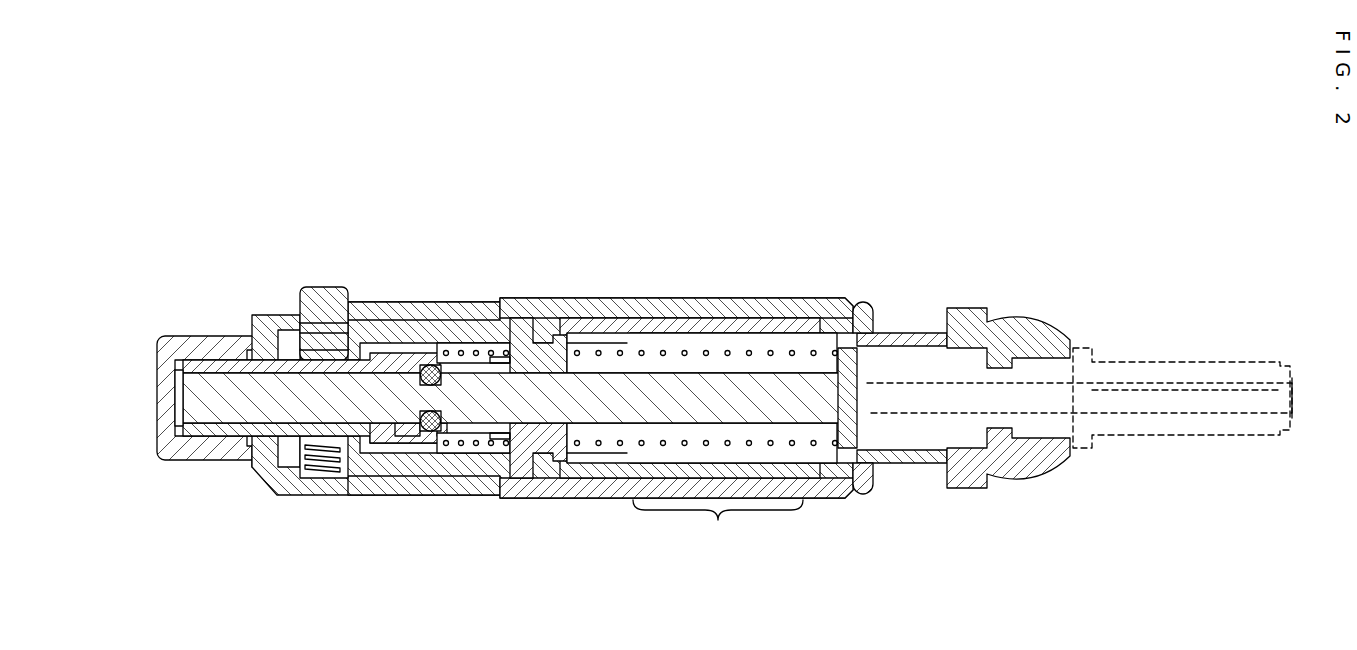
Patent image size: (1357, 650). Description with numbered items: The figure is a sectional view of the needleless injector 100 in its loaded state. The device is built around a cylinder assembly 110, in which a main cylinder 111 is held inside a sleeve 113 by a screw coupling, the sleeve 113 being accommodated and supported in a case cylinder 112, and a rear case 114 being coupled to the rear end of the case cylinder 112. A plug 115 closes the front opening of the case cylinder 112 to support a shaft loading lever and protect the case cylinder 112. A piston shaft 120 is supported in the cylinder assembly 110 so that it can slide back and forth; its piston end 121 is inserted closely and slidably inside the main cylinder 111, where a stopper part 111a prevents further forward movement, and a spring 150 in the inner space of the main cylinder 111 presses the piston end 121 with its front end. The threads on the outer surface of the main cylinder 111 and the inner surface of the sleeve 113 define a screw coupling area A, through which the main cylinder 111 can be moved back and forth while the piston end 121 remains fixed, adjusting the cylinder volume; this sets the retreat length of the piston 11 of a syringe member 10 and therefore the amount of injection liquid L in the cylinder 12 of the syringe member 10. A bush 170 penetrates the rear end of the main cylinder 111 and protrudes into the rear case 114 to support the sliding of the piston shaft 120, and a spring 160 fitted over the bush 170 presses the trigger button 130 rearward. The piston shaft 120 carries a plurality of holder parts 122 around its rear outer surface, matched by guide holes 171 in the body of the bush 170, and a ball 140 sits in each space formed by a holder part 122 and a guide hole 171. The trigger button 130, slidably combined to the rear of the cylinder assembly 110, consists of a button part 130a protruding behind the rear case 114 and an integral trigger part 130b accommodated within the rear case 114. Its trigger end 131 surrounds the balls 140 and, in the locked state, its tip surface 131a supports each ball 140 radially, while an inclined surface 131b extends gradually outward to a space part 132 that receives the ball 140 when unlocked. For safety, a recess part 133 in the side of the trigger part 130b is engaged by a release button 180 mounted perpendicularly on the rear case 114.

The needleless injector 100 is at (210, 56).
The cylinder assembly 110 is at (552, 334).
The main cylinder 111 is at (902, 333).
The stopper part 111a is at (975, 347).
The case cylinder 112 is at (705, 298).
The sleeve 113 is at (760, 322).
The rear case 114 is at (389, 302).
The plug 115 is at (864, 312).
The piston shaft 120 is at (213, 396).
The piston end 121 is at (858, 410).
The holder part 122 is at (447, 387).
The trigger button 130 is at (160, 432).
The button part 130a is at (157, 436).
The trigger part 130b is at (255, 468).
The trigger end 131 is at (434, 443).
The tip surface 131a is at (420, 436).
The inclined surface 131b is at (438, 436).
The space part 132 is at (377, 443).
The recess part 133 is at (300, 478).
The ball 140 is at (431, 362).
The spring 150 is at (621, 350).
The spring 160 is at (478, 350).
The bush 170 is at (546, 452).
The guide hole 171 is at (500, 440).
The release button 180 is at (324, 287).
The syringe member 10 is at (1079, 381).
The piston 11 is at (1100, 435).
The cylinder 12 is at (1213, 362).
The screw coupling area A is at (718, 529).
The injection liquid L is at (1207, 435).